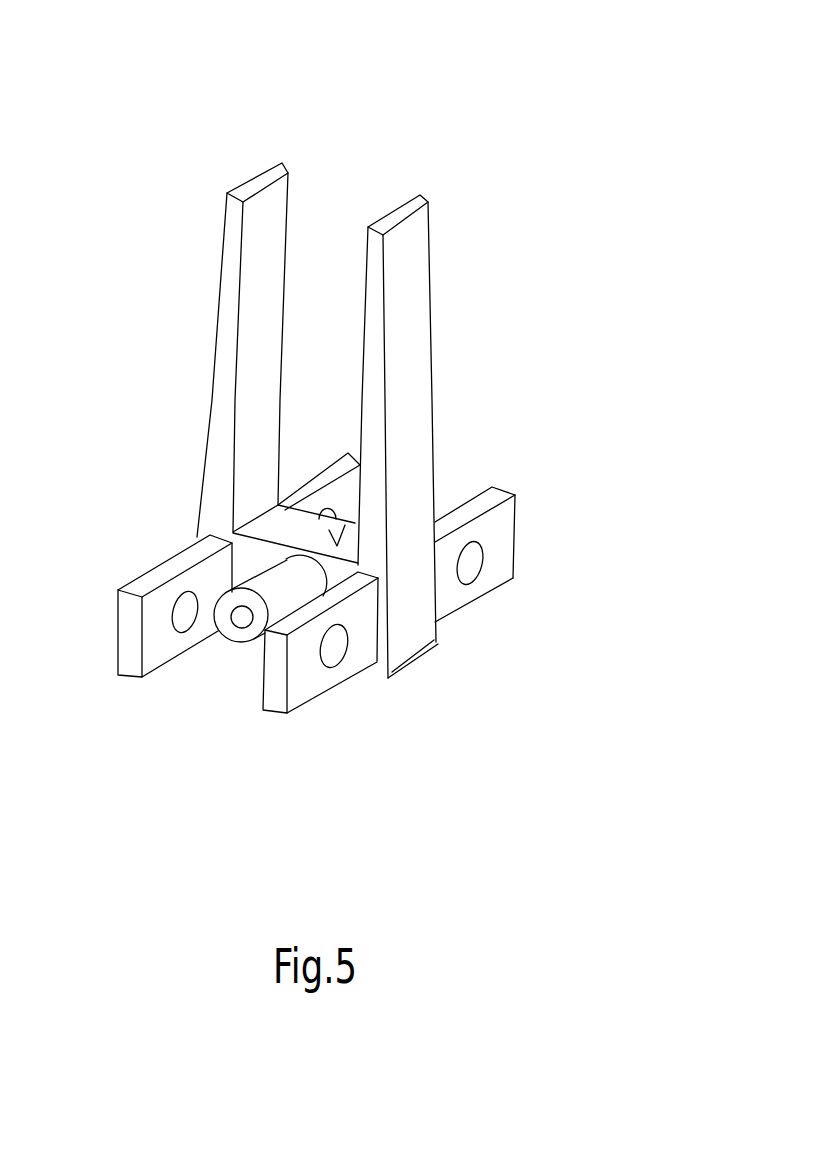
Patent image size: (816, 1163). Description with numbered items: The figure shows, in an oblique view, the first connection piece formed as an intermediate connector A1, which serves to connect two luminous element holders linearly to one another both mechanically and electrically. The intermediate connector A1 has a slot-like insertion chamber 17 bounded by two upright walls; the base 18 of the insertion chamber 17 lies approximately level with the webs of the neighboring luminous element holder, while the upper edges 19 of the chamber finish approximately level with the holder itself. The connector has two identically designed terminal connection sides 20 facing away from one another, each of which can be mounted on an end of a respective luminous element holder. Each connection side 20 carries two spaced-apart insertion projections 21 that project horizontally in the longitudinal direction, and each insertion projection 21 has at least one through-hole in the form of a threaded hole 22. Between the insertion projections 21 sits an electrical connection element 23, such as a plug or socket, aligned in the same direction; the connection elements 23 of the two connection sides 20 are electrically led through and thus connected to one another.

The insertion chamber 17 is at (340, 372).
The base 18 is at (346, 527).
The upper edges 19 is at (422, 200).
The terminal connection sides 20 is at (340, 420).
The insertion projections 21 is at (313, 574).
The threaded hole 22 is at (328, 512).
The electrical connection element 23 is at (247, 637).
The intermediate connector A1 is at (478, 142).